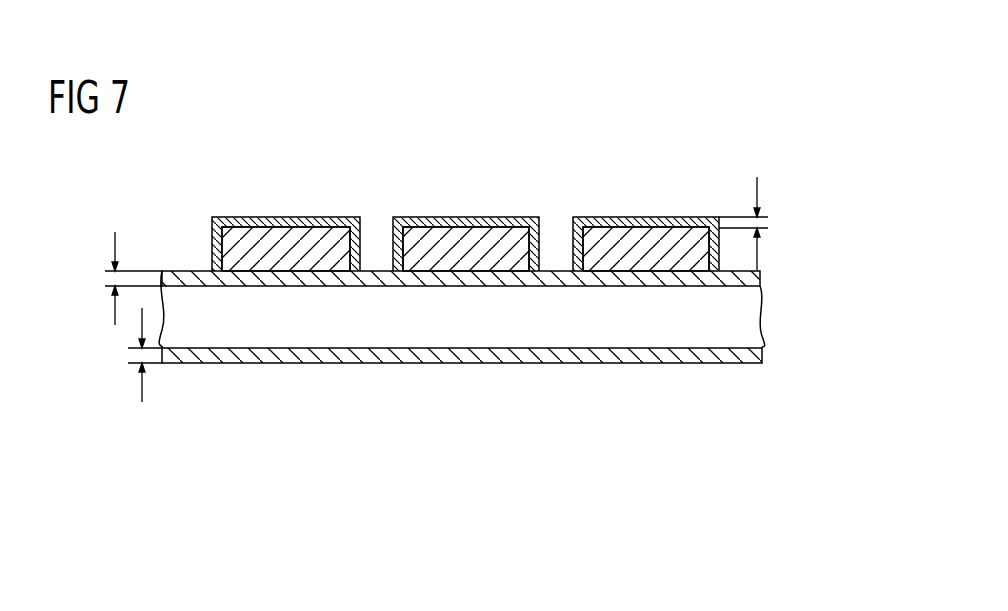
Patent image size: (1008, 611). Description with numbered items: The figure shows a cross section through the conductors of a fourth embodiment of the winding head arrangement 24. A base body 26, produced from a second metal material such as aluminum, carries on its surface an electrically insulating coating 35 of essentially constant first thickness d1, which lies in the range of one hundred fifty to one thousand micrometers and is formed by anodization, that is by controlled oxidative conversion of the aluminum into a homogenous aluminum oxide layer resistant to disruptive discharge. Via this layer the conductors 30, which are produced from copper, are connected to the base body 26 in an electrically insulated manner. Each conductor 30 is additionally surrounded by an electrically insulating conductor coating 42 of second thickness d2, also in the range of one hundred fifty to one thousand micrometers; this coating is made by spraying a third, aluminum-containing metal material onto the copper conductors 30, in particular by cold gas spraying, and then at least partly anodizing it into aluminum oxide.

The winding head arrangement 24 is at (782, 262).
The base body 26 is at (756, 313).
The conductors 30 is at (285, 242).
The electrically insulating coating 35 is at (565, 365).
The electrically insulating conductor coating 42 is at (343, 222).
The first thickness d1 is at (105, 279).
The second thickness d2 is at (768, 222).